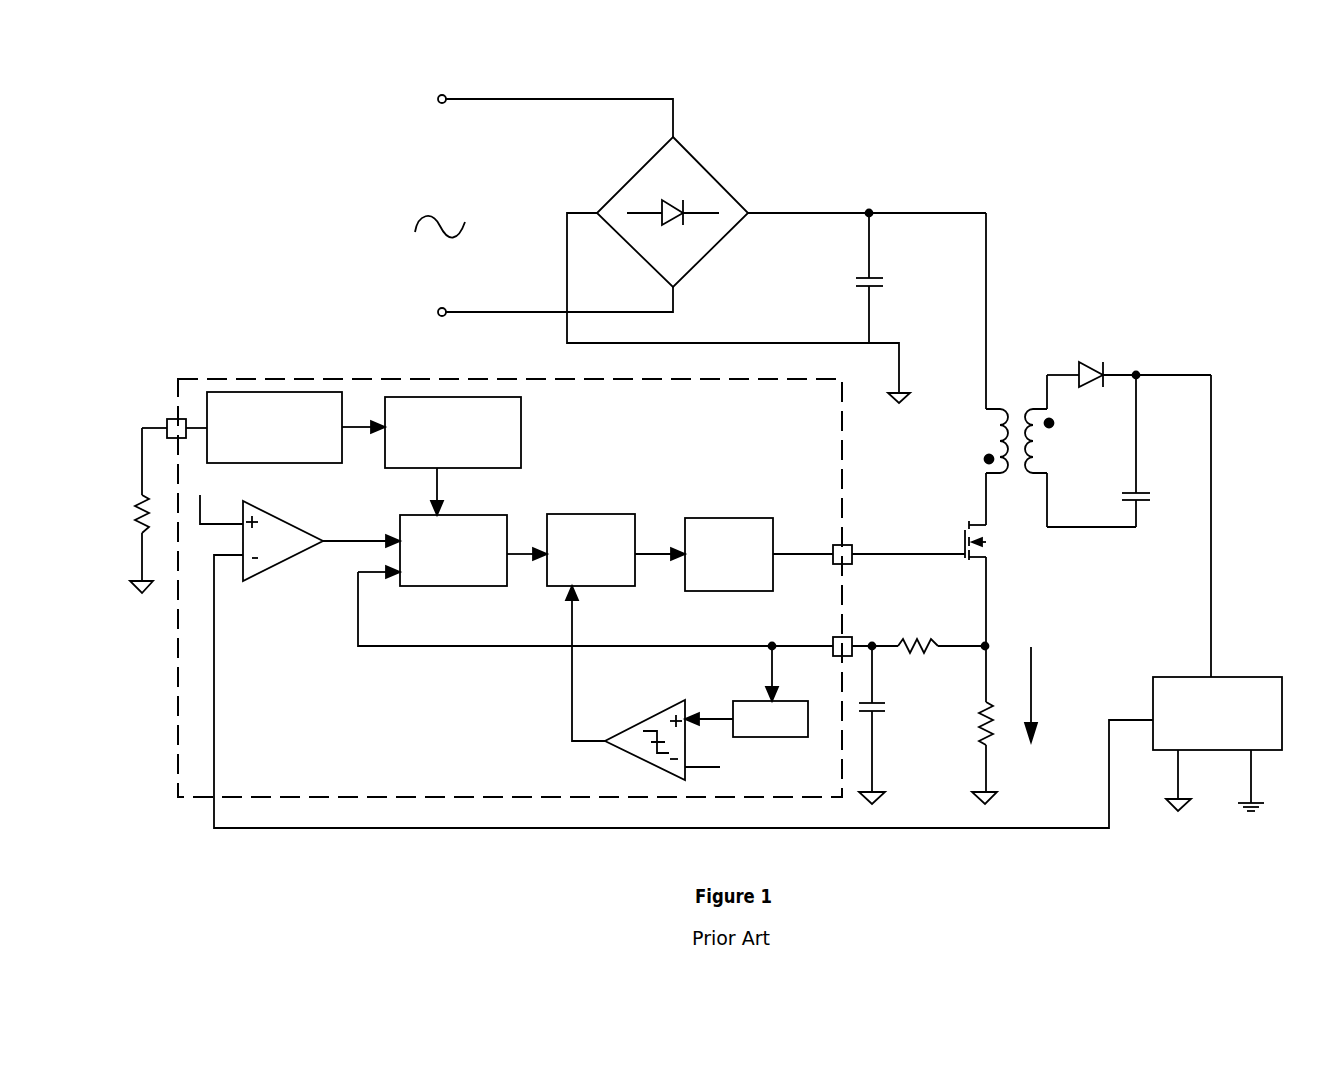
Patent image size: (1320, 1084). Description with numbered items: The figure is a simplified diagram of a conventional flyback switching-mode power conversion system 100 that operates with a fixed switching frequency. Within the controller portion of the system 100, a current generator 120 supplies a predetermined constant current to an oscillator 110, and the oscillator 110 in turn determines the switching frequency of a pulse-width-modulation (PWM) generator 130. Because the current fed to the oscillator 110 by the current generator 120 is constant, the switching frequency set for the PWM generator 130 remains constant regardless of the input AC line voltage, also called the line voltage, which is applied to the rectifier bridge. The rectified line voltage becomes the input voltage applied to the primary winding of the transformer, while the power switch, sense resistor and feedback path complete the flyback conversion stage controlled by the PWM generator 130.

The flyback switching-mode power conversion system 100 is at (181, 145).
The oscillator 110 is at (521, 432).
The current generator 120 is at (297, 463).
The pulse-width-modulation (PWM) generator 130 is at (453, 587).